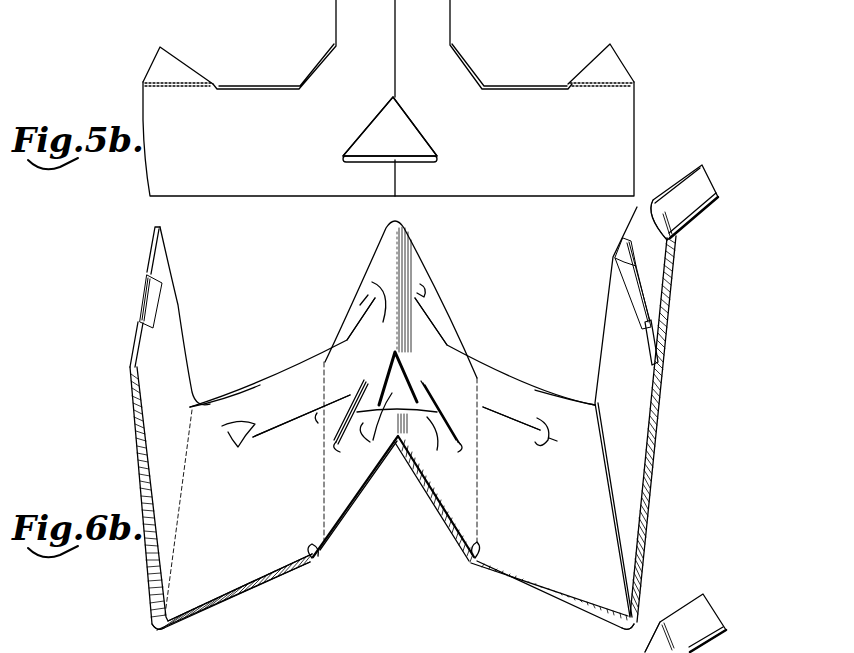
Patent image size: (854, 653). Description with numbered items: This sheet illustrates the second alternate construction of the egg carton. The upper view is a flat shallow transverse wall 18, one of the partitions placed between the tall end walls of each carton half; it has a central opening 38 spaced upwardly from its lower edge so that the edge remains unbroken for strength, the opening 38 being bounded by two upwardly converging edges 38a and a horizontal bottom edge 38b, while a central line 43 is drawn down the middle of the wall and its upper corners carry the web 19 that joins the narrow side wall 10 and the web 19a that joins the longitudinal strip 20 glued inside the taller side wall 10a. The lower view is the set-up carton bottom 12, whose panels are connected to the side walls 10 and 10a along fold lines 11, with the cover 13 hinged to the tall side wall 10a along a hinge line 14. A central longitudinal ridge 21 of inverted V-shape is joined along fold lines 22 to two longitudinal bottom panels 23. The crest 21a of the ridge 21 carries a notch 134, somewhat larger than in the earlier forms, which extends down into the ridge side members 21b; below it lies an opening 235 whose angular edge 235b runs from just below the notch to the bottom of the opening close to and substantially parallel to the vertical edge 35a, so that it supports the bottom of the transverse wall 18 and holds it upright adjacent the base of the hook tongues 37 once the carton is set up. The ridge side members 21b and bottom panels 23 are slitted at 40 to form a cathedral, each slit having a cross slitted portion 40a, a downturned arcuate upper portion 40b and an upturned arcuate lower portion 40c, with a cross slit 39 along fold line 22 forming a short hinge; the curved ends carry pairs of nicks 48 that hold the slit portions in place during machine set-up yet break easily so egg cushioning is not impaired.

In FIG. 6B, the side wall 10 is at (134, 400).
In FIG. 6B, the taller side wall 10a is at (652, 450).
In FIG. 6B, the fold lines 11 is at (173, 563).
In FIG. 6B, the bottom portion 12 is at (259, 597).
In FIG. 6B, the cover 13 is at (712, 191).
In FIG. 6B, the hinge line 14 is at (656, 215).
In FIG. 5B, the shallow transverse wall 18 is at (556, 148).
In FIG. 5B, the web 19 is at (162, 69).
In FIG. 6B, the web 19 is at (160, 307).
In FIG. 5B, the web 19a is at (612, 64).
In FIG. 6B, the web 19a is at (628, 300).
In FIG. 6B, the longitudinal strip 20 is at (650, 381).
In FIG. 6B, the central longitudinal ridge 21 is at (473, 493).
In FIG. 6B, the crest of the ridge 21a is at (410, 226).
In FIG. 6B, the ridge side members 21b is at (428, 496).
In FIG. 6B, the fold lines 22 is at (318, 562).
In FIG. 6B, the longitudinal bottom panels 23 is at (196, 618).
In FIG. 6B, the vertical edge 35a is at (364, 400).
In FIG. 6B, the hook tongues 37 is at (380, 380).
In FIG. 5B, the central opening 38 is at (400, 125).
In FIG. 5B, the upwardly converging edges 38a is at (366, 122).
In FIG. 5B, the horizontal bottom edge 38b is at (405, 165).
In FIG. 6B, the cross slit 39 is at (480, 410).
In FIG. 6B, the slits 40 is at (309, 403).
In FIG. 6B, the cross slitted portion 40a is at (285, 423).
In FIG. 6B, the downturned upper portion 40b is at (375, 336).
In FIG. 6B, the upturned lower portion 40c is at (267, 413).
In FIG. 5B, the center slit 43 is at (398, 55).
In FIG. 6B, the nicks 48 is at (388, 355).
In FIG. 6B, the notch 134 is at (370, 420).
In FIG. 6B, the opening 235 is at (340, 430).
In FIG. 6B, the angular edge 235b is at (357, 437).